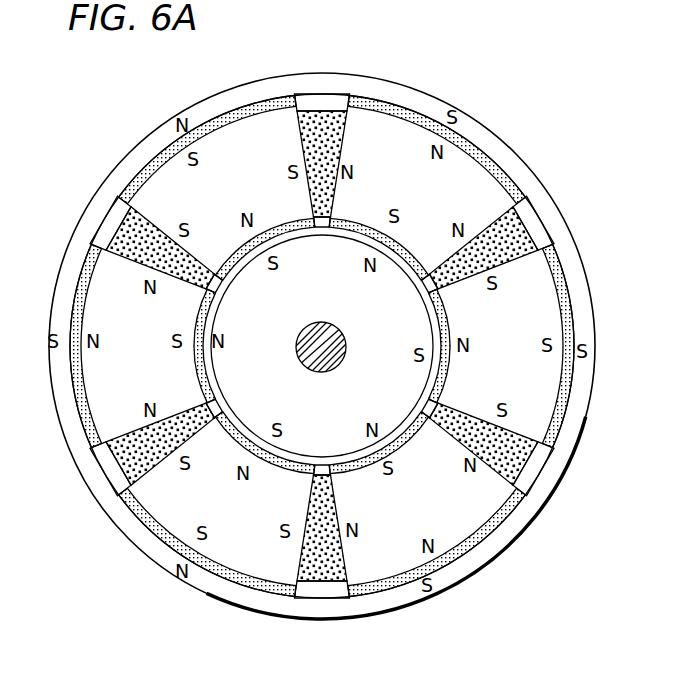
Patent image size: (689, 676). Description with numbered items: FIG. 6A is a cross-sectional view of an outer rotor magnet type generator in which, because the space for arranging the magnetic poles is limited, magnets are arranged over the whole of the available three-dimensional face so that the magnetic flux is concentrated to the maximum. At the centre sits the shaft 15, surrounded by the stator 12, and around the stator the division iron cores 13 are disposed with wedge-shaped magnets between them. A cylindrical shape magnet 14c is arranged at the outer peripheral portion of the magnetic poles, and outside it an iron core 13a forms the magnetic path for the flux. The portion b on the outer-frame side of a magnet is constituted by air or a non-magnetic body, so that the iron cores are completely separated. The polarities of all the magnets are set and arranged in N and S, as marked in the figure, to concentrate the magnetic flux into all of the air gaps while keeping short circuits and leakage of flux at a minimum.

The stator 12 is at (240, 361).
The division iron core 13 is at (237, 545).
The iron core 13a is at (530, 174).
The cylindrical shape magnet 14c is at (385, 591).
The shaft 15 is at (320, 372).
The portion of a side of the outer frame b is at (314, 104).